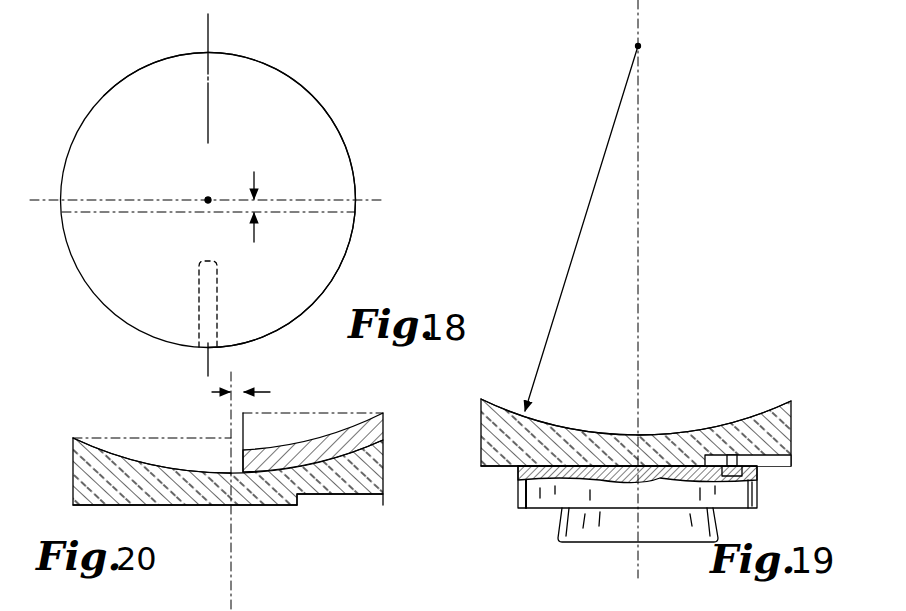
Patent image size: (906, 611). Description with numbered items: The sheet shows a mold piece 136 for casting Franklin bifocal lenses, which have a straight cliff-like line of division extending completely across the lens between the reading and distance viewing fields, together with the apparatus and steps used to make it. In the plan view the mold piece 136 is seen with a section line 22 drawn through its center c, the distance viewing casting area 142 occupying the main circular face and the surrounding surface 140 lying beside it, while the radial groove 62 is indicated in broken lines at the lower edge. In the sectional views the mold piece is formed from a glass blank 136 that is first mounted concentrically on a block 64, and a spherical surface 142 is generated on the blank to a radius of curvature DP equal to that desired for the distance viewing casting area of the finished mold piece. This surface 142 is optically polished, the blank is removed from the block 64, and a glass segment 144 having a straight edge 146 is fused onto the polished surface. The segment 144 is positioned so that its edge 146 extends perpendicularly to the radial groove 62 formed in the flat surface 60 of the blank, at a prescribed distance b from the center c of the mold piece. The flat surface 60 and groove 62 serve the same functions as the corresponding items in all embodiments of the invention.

In FIG. 18, the mold piece 136 is at (302, 83).
In FIG. 20, the mold piece 136 is at (70, 463).
In FIG. 19, the mold piece 136 is at (480, 430).
In FIG. 18, the spherical surface 142 is at (318, 145).
In FIG. 20, the spherical surface 142 is at (121, 456).
In FIG. 19, the spherical surface 142 is at (757, 410).
In FIG. 18, the peripheral surface 140 is at (318, 248).
In FIG. 18, the radial groove 62 is at (215, 322).
In FIG. 20, the radial groove 62 is at (345, 497).
In FIG. 19, the radial groove 62 is at (780, 458).
In FIG. 18, the section line 22 is at (237, 27).
In FIG. 18, the center c is at (207, 199).
In FIG. 18, the prescribed distance b is at (258, 205).
In FIG. 20, the prescribed distance b is at (234, 396).
In FIG. 20, the glass segment 144 is at (360, 422).
In FIG. 20, the straight edge 146 is at (232, 446).
In FIG. 20, the flat surface 60 is at (165, 505).
In FIG. 19, the flat surface 60 is at (497, 466).
In FIG. 19, the radius of curvature DP is at (610, 125).
In FIG. 19, the block 64 is at (514, 496).